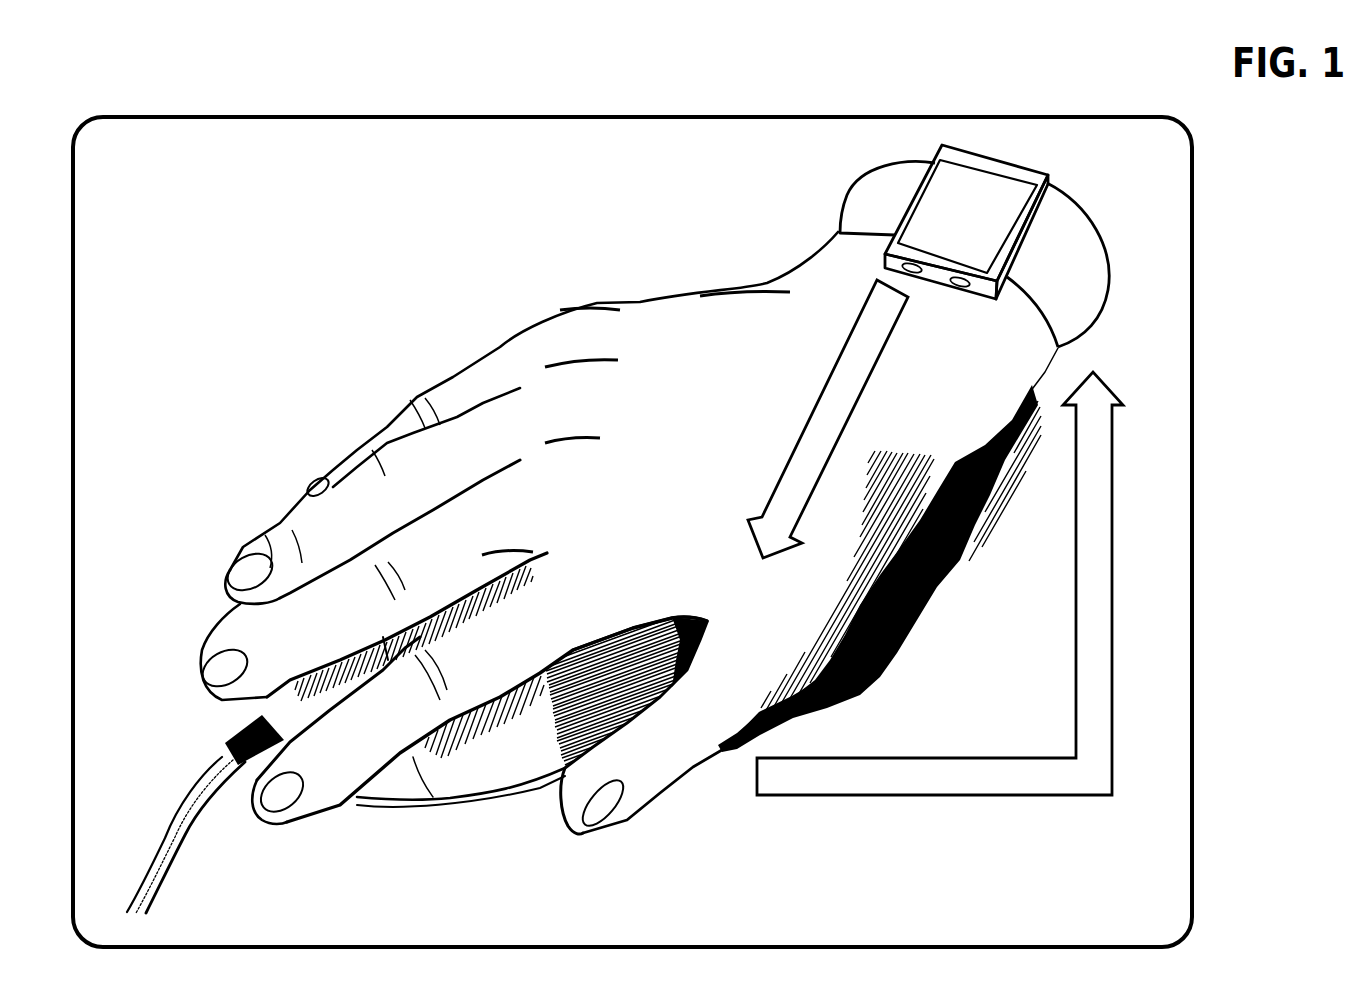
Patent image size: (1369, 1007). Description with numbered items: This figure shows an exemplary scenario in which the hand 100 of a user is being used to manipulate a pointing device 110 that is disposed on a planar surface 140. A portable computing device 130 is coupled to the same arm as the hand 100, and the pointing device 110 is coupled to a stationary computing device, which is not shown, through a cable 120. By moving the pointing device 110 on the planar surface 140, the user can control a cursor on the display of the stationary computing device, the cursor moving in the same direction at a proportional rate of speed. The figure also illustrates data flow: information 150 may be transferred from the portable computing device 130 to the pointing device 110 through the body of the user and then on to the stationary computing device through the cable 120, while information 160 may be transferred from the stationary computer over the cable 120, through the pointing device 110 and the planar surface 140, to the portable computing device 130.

The hand 100 is at (527, 314).
The pointing device 110 is at (423, 810).
The cable 120 is at (157, 834).
The portable computing device 130 is at (1080, 210).
The planar surface 140 is at (187, 116).
The information 150 is at (777, 481).
The information 160 is at (935, 797).